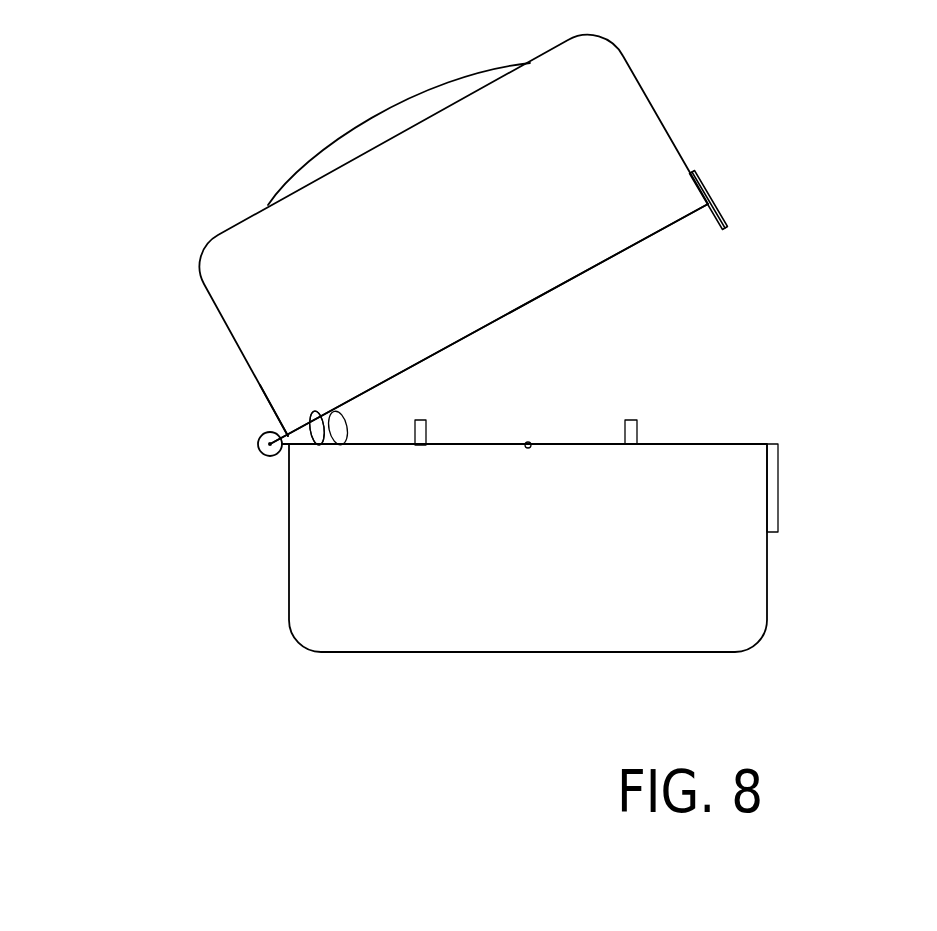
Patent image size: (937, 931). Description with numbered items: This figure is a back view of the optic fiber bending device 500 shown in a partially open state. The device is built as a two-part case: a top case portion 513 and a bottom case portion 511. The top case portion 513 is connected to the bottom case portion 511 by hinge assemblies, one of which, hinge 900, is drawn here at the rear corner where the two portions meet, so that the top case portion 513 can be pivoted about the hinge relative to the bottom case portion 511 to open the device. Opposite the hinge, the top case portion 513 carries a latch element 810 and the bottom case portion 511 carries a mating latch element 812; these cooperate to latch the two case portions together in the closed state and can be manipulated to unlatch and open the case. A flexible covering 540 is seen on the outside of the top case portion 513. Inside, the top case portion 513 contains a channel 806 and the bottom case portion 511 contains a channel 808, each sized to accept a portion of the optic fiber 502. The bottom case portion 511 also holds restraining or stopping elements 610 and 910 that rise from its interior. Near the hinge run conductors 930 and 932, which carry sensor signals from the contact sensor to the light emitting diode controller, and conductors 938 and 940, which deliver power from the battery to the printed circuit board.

The optic fiber bending device 500 is at (323, 732).
The optic fiber 502 is at (529, 441).
The bottom case portion 511 is at (767, 570).
The top case portion 513 is at (650, 100).
The flexible covering 540 is at (393, 100).
The restraining element 610 is at (427, 422).
The channel 806 is at (496, 318).
The channel 808 is at (528, 448).
The latch element 810 is at (714, 204).
The latch element 812 is at (778, 467).
The hinge assembly 900 is at (260, 452).
The restraining element 910 is at (637, 421).
The conductor 930 is at (320, 420).
The conductor 932 is at (299, 423).
The conductor 938 is at (328, 443).
The conductor 940 is at (345, 443).